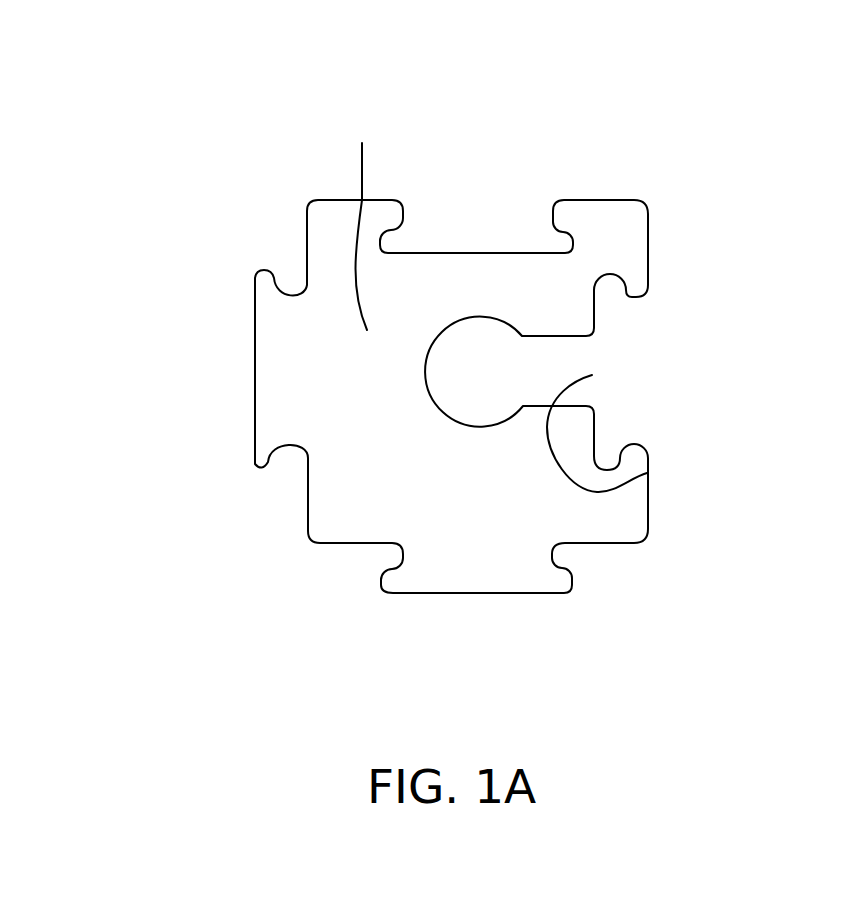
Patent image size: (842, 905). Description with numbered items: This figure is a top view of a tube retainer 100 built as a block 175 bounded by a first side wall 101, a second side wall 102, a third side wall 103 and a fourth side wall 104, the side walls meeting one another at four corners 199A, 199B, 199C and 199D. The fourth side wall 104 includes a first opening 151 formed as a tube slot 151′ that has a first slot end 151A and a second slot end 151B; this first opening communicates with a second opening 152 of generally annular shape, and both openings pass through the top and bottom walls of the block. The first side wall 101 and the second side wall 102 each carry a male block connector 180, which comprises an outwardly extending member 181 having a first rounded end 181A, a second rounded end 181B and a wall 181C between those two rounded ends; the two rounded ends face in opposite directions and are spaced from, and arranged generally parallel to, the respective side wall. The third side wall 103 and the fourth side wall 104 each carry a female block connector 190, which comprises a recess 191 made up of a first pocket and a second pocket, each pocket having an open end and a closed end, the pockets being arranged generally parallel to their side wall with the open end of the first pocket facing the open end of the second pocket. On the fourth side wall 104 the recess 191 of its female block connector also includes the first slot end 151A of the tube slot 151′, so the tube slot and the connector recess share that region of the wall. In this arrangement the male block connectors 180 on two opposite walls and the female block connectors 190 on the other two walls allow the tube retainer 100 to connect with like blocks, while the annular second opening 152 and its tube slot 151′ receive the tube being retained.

The tube retainer 100 is at (175, 146).
The first side wall 101 is at (590, 543).
The second side wall 102 is at (310, 487).
The third side wall 103 is at (576, 200).
The fourth side wall 104 is at (650, 266).
The first opening 151 is at (588, 393).
The first slot end 151A is at (647, 473).
The second slot end 151B is at (517, 354).
The tube slot 151′ is at (565, 367).
The second opening 152 is at (500, 381).
The block 175 is at (360, 220).
The male block connector 180 is at (212, 444).
The outwardly extending member 181 is at (270, 328).
The first rounded end 181A is at (268, 280).
The second rounded end 181B is at (265, 463).
The wall 181C is at (255, 372).
The female block connector 190 is at (445, 222).
The recess 191 is at (505, 237).
The corner 199A is at (312, 528).
The corner 199B is at (330, 202).
The corner 199C is at (632, 196).
The corner 199D is at (640, 530).